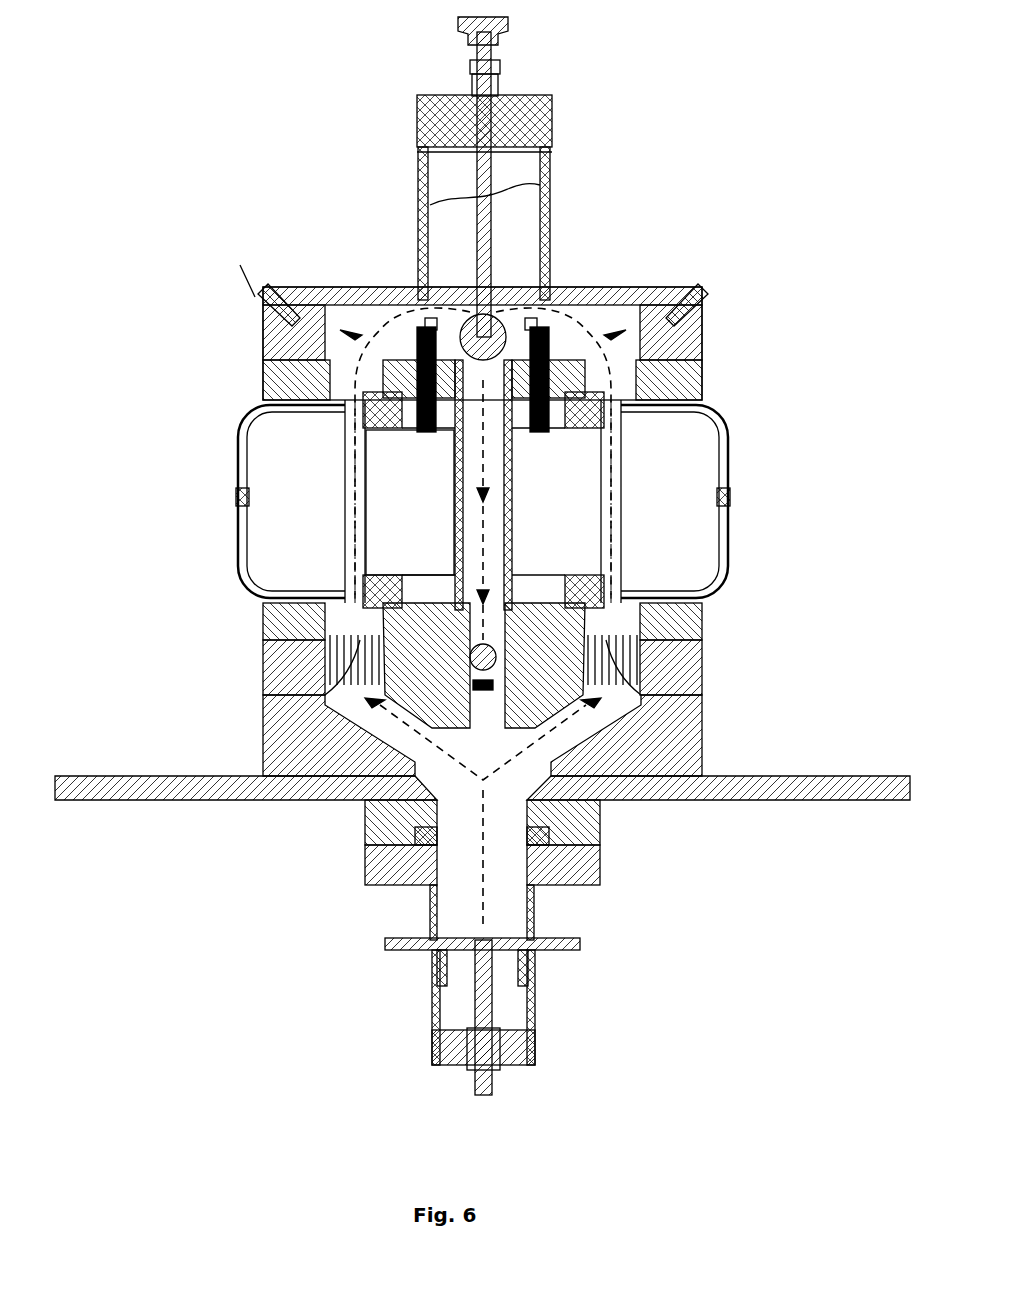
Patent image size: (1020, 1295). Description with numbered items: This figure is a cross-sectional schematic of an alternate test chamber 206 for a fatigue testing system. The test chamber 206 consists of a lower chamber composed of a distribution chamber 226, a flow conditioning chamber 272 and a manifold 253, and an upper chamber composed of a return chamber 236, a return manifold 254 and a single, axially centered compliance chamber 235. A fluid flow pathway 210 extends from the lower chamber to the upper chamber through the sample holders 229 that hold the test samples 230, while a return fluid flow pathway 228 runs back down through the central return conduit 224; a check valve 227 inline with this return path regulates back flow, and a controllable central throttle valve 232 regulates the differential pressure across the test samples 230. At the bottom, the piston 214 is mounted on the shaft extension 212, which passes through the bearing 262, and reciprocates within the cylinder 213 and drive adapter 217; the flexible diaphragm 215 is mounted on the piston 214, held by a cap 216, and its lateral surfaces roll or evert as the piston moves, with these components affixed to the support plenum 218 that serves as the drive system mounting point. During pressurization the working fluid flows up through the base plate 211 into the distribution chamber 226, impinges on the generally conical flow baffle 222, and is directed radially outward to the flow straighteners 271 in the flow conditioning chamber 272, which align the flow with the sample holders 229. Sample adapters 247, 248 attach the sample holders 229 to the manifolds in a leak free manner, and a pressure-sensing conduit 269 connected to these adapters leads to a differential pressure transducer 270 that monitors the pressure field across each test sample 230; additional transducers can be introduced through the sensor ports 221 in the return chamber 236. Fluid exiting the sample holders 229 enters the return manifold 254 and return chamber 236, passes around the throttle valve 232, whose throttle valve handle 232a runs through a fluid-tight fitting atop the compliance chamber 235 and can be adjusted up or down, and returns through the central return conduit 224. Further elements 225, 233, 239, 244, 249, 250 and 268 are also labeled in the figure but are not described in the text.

The test chamber 206 is at (715, 140).
The fluid flow pathway 210 is at (345, 628).
The base plate 211 is at (150, 800).
The shaft extension 212 is at (474, 1078).
The cylinder 213 is at (536, 1048).
The piston 214 is at (445, 965).
The diaphragm 215 is at (528, 985).
The cap 216 is at (507, 940).
The drive adapter 217 is at (600, 870).
The plenum 218 is at (364, 825).
The sensor port 221 is at (258, 290).
The flow baffle 222 is at (430, 720).
The central return conduit 224 is at (455, 480).
The tube 225 is at (426, 190).
The distribution chamber 226 is at (264, 752).
The check valve 227 is at (487, 692).
The return fluid flow pathway 228 is at (492, 462).
The sample holder 229 is at (366, 525).
The test sample 230 is at (344, 500).
The throttle valve 232 is at (492, 330).
The throttle valve handle 232a is at (456, 27).
The cap block 233 is at (527, 95).
The compliance chamber 235 is at (515, 180).
The return chamber 236 is at (704, 320).
The passage 239 is at (520, 330).
The passage 244 is at (432, 330).
The sample adapter 247 is at (375, 580).
The sample adapter 248 is at (392, 432).
The lower seal ring 249 is at (330, 575).
The upper seal ring 250 is at (332, 432).
The distribution manifold 253 is at (704, 625).
The return manifold 254 is at (262, 378).
The bearing 262 is at (496, 1072).
The passage 268 is at (612, 330).
The pressure-sensing conduit 269 is at (240, 425).
The pressure transducer 270 is at (236, 497).
The flow straightener 271 is at (330, 692).
The flow conditioning chamber 272 is at (704, 682).